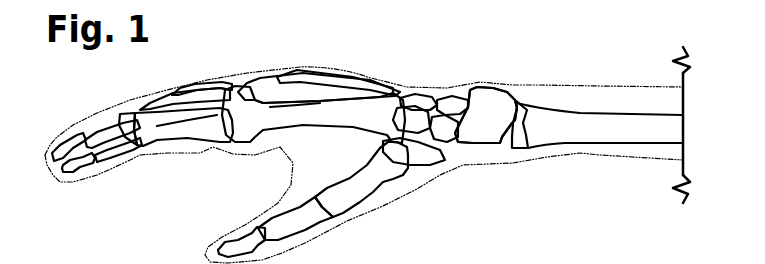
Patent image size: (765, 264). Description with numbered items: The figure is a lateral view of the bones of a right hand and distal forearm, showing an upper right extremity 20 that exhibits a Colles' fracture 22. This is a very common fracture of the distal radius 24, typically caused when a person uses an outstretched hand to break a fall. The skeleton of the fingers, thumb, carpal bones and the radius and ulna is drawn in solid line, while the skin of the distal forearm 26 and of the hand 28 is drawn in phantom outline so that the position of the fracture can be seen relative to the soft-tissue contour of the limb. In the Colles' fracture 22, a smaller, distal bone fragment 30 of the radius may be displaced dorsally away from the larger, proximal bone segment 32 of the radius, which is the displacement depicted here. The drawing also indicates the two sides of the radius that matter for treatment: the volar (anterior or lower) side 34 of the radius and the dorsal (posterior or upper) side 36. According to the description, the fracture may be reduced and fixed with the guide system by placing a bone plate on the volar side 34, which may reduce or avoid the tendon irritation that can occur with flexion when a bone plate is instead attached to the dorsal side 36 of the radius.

The upper right extremity 20 is at (256, 38).
The Colles' fracture 22 is at (523, 93).
The distal radius 24 is at (588, 146).
The distal forearm 26 is at (632, 163).
The hand 28 is at (375, 233).
The distal bone fragment 30 is at (483, 133).
The proximal bone segment 32 is at (525, 140).
The volar side 34 is at (450, 158).
The dorsal side 36 is at (497, 85).